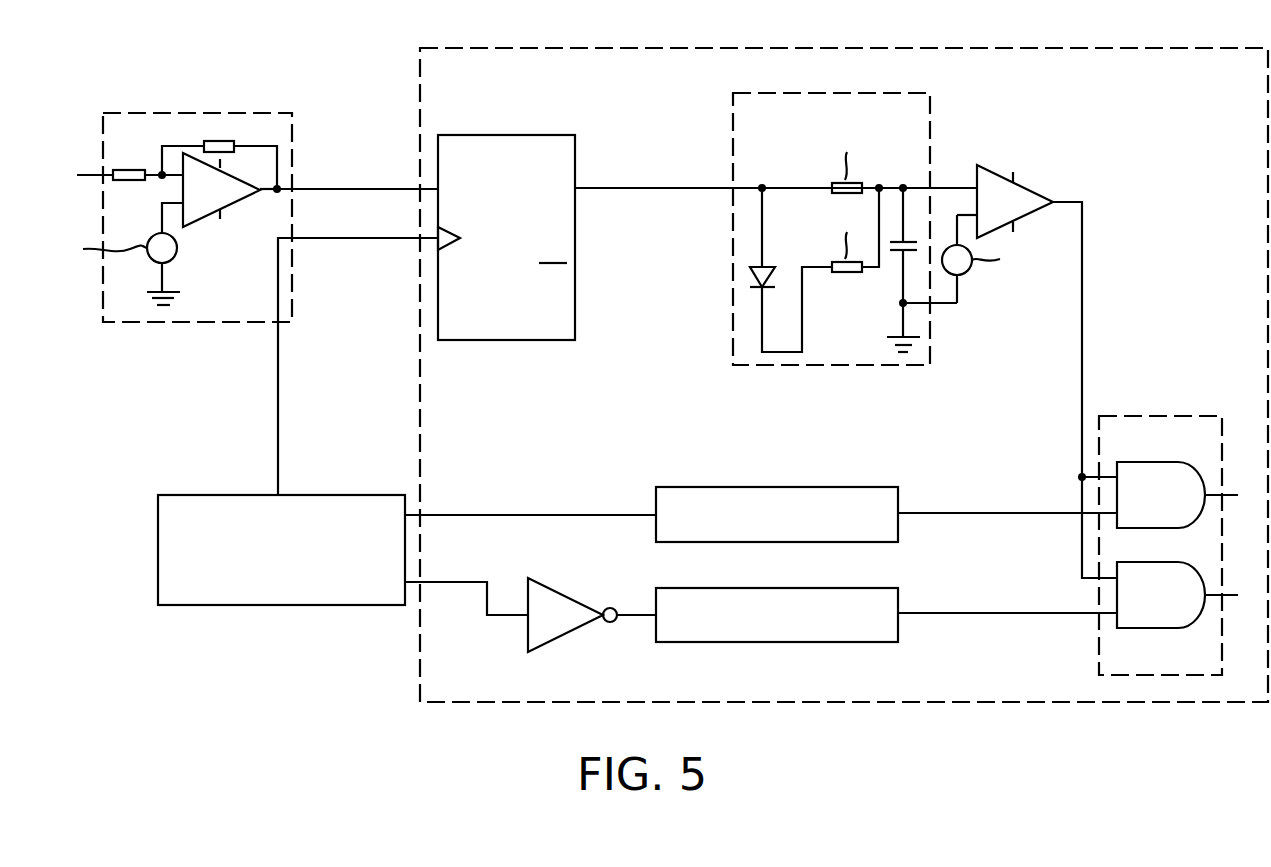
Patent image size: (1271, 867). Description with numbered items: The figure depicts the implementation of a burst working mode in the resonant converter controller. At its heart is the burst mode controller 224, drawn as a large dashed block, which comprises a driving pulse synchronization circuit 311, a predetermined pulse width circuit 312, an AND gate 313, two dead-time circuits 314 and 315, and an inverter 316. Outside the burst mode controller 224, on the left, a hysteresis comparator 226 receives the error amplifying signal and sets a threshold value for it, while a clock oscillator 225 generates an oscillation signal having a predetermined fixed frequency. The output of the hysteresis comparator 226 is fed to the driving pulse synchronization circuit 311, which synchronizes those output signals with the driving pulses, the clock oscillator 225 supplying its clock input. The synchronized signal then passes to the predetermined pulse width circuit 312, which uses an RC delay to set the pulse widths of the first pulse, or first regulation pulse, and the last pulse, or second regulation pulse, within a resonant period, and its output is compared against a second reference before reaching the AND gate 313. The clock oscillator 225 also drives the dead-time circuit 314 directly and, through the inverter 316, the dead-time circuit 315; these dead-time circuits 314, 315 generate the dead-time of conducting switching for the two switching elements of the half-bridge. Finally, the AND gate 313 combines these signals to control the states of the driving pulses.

The burst mode controller 224 is at (421, 56).
The clock oscillator 225 is at (160, 495).
The hysteresis comparator 226 is at (198, 113).
The driving pulse synchronization circuit 311 is at (507, 135).
The predetermined pulse width circuit 312 is at (735, 96).
The AND gate 313 is at (1157, 416).
The dead-time circuit 314 is at (656, 487).
The dead-time circuit 315 is at (656, 588).
The inverter 316 is at (566, 596).